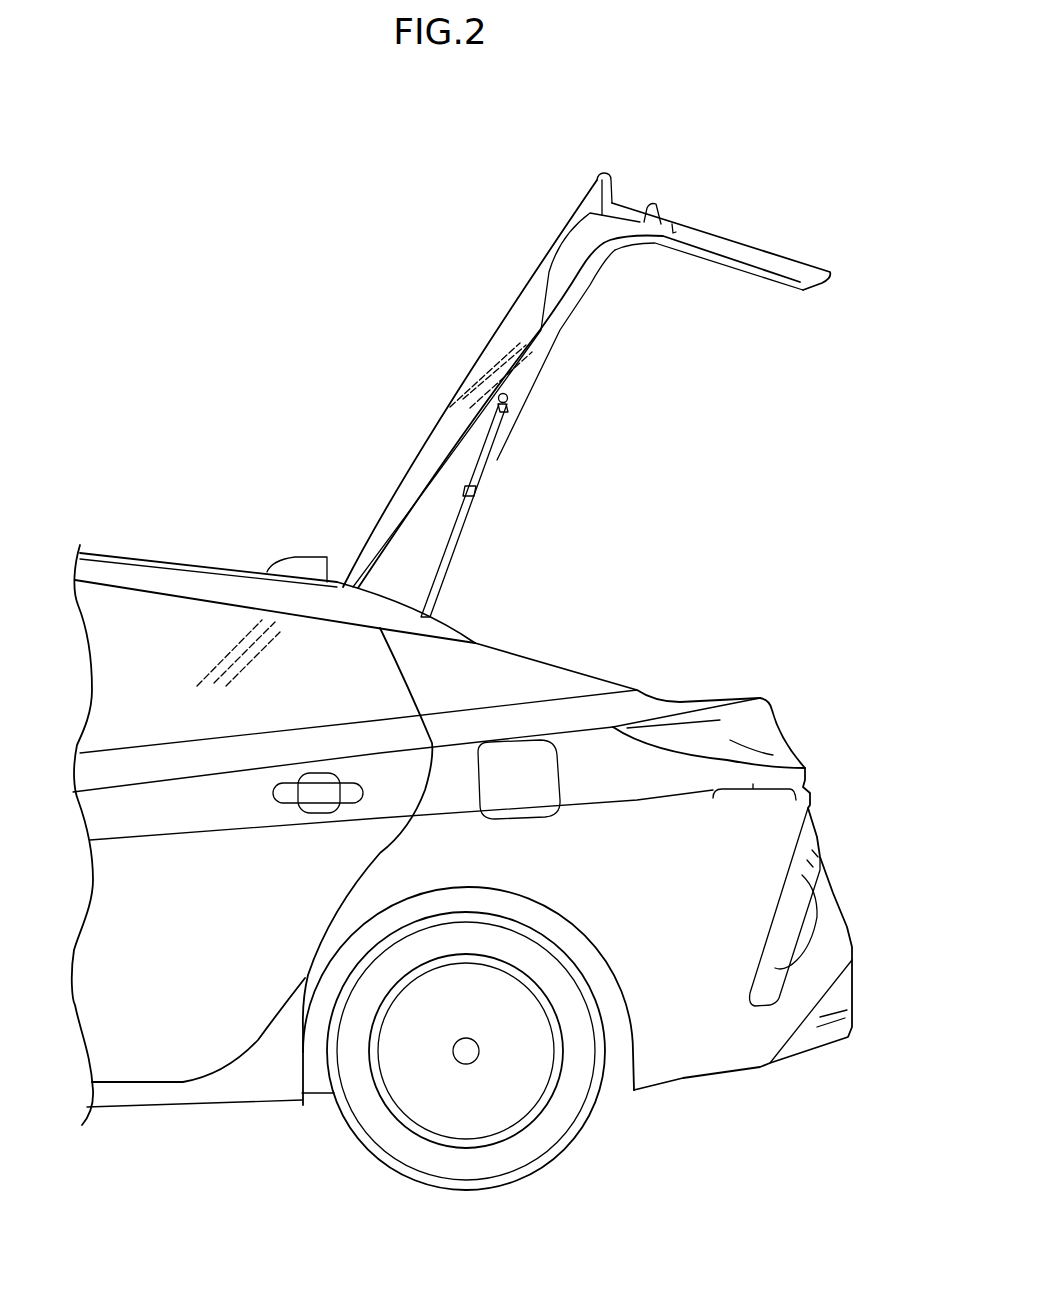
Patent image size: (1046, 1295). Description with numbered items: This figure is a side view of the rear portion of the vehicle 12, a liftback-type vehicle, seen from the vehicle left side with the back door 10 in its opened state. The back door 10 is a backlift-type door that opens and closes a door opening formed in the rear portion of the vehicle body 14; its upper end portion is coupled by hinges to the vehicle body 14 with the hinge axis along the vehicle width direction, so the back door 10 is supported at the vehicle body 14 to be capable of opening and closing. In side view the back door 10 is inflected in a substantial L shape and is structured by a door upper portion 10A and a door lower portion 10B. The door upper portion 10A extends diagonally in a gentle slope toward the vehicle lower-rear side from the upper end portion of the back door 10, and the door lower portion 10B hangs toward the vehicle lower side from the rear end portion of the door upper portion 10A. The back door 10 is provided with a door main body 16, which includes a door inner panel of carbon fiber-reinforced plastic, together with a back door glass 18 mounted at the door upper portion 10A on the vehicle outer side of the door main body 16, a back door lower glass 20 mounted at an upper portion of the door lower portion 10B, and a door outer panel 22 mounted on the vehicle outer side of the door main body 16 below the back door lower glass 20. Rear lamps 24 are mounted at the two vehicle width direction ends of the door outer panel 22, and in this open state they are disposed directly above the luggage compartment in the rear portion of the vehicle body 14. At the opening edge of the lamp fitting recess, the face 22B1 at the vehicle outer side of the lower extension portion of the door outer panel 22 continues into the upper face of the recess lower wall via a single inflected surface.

The back door 10 is at (586, 344).
The door upper portion 10A is at (537, 380).
The door lower portion 10B is at (733, 273).
The vehicle 12 is at (462, 801).
The vehicle body 14 is at (183, 563).
The door main body 16 is at (571, 323).
The back door glass 18 is at (430, 427).
The back door lower glass 20 is at (623, 197).
The door outer panel 22 is at (760, 247).
The face at the vehicle outer side of the lower extension portion 22B1 is at (726, 153).
The rear lamps 24 is at (650, 200).